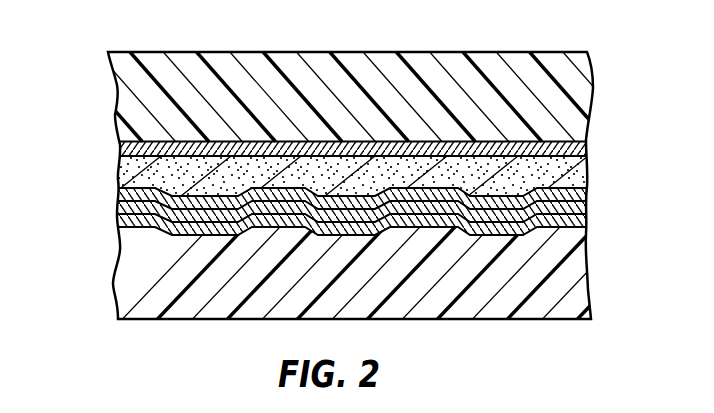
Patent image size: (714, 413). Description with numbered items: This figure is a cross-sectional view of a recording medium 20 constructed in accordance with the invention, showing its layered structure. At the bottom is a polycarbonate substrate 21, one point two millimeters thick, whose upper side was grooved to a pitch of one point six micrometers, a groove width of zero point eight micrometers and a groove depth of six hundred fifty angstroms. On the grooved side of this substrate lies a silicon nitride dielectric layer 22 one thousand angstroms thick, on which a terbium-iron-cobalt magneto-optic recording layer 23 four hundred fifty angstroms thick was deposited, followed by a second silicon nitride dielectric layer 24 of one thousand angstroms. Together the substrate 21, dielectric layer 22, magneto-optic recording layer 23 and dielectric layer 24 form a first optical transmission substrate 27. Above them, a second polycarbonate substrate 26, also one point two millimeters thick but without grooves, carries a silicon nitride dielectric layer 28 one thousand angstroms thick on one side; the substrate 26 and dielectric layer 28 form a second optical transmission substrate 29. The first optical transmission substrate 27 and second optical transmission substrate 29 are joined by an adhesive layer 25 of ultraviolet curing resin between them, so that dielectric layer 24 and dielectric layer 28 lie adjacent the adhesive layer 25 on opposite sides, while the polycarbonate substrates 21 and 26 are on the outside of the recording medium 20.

The recording medium 20 is at (95, 312).
The polycarbonate substrate 21 is at (563, 275).
The silicon nitride dielectric layer 22 is at (588, 216).
The magneto-optic recording layer 23 is at (586, 212).
The silicon nitride dielectric layer 24 is at (584, 195).
The adhesive layer 25 is at (572, 180).
The second polycarbonate substrate 26 is at (575, 100).
The first optical transmission substrate 27 is at (648, 192).
The silicon nitride dielectric layer 28 is at (580, 149).
The second optical transmission substrate 29 is at (647, 84).